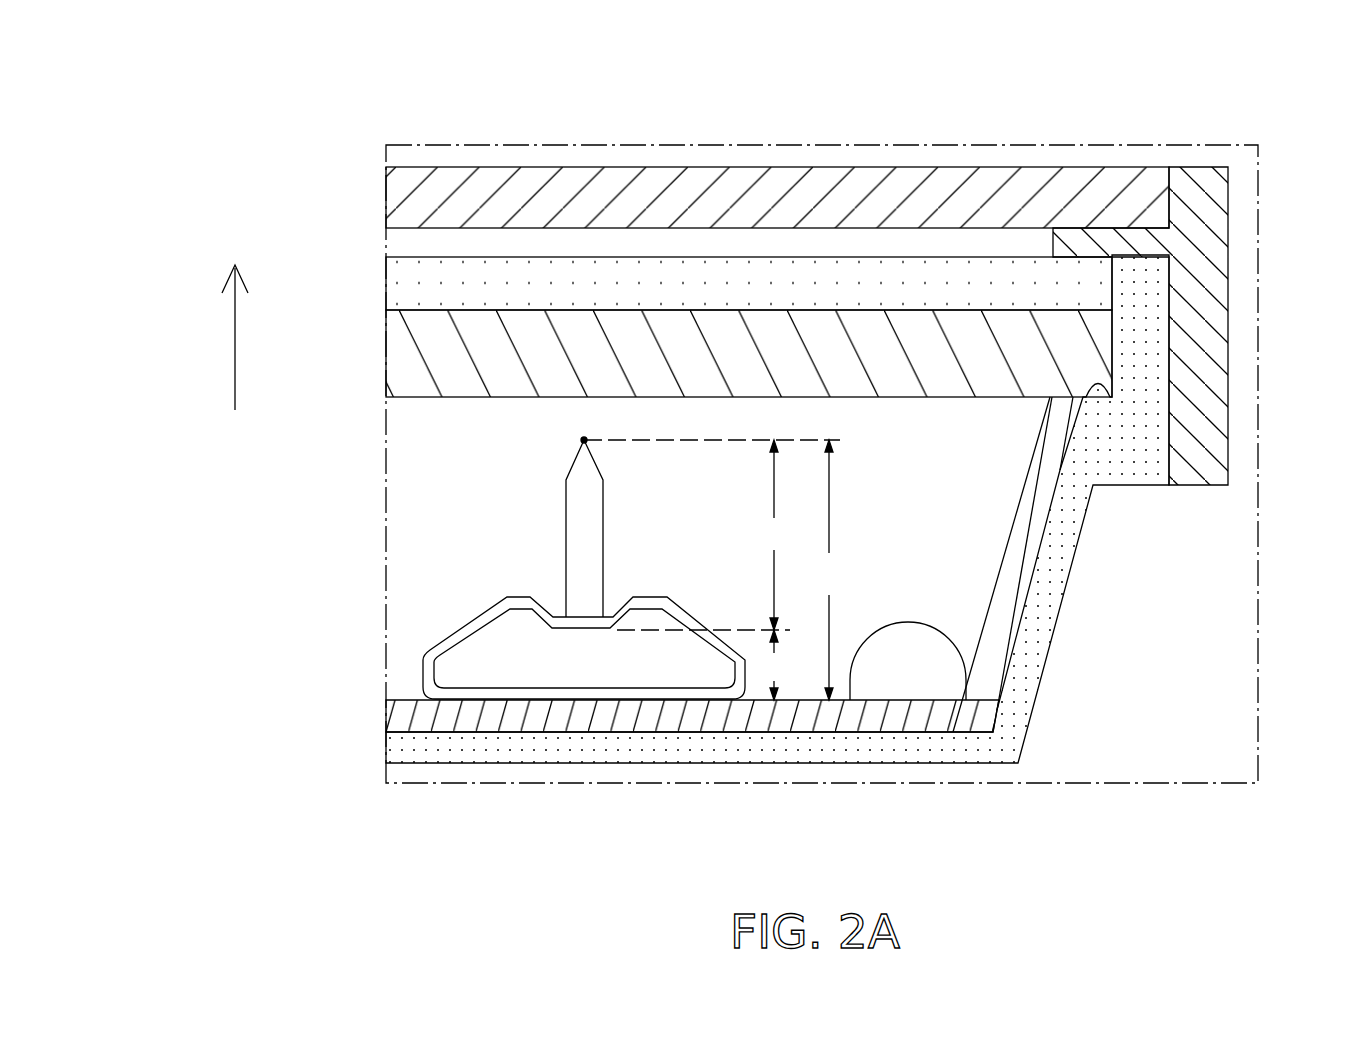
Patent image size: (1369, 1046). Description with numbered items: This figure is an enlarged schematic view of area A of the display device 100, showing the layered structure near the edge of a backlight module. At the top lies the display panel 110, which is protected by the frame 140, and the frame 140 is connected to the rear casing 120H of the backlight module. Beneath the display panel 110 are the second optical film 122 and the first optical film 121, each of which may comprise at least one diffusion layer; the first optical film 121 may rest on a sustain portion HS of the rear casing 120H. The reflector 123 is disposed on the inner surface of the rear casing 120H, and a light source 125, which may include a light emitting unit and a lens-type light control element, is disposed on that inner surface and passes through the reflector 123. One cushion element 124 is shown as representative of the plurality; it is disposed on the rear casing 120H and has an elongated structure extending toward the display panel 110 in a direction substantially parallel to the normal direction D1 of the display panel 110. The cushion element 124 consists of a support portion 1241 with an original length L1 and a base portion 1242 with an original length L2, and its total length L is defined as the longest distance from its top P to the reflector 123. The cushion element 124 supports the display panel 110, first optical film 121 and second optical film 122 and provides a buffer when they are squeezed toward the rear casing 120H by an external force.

The display device 100 is at (132, 82).
The display panel 110 is at (615, 185).
The first optical film 121 is at (823, 345).
The second optical film 122 is at (417, 283).
The reflector 123 is at (400, 715).
The cushion element 124 is at (523, 562).
The support portion 1241 is at (565, 540).
The base portion 1242 is at (418, 649).
The light source 125 is at (912, 675).
The rear casing 120H is at (458, 752).
The frame 140 is at (1213, 290).
The sustain portion HS is at (1098, 384).
The top P is at (540, 442).
The area A is at (413, 143).
The normal direction D1 is at (233, 320).
The total length L is at (828, 570).
The original length of support portion L1 is at (774, 535).
The original length of base portion L2 is at (772, 665).